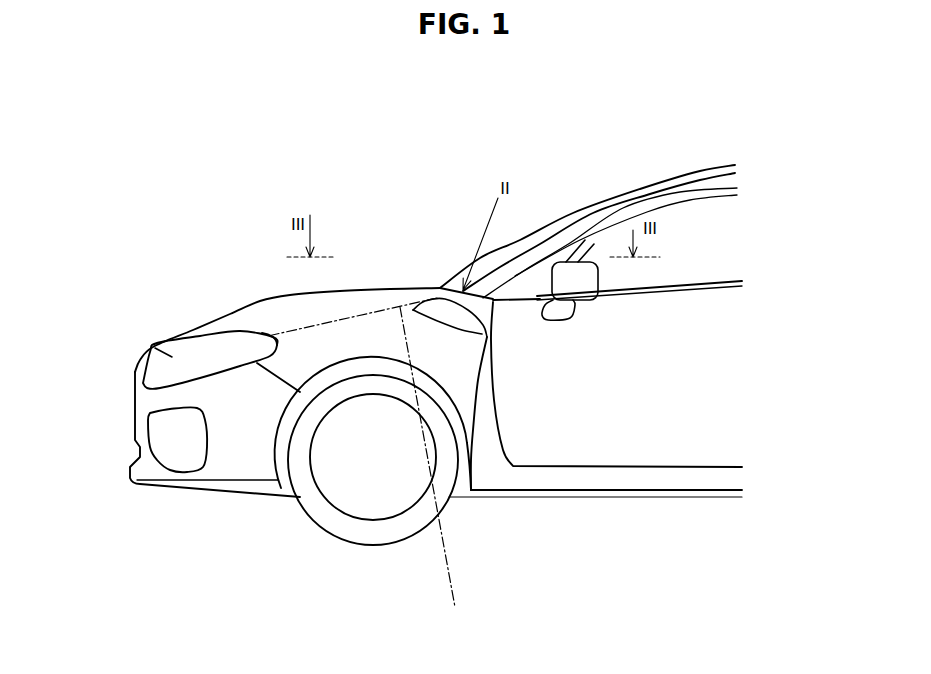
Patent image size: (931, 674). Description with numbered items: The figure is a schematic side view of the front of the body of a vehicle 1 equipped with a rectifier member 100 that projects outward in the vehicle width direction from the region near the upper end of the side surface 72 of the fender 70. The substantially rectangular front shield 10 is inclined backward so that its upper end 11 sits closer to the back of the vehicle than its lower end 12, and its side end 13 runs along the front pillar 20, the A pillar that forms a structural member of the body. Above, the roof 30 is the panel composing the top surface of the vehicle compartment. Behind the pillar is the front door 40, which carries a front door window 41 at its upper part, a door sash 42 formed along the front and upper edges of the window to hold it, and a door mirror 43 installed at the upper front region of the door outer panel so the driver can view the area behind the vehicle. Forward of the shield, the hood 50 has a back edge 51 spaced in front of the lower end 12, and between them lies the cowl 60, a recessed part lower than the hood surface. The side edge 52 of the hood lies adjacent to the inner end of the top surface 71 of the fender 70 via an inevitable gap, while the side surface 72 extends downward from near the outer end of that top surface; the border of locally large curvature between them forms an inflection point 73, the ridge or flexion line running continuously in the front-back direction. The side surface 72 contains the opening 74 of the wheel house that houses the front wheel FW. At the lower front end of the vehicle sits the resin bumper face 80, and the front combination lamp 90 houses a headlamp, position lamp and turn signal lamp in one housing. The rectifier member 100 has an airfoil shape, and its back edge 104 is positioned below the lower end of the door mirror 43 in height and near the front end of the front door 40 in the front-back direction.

The vehicle 1 is at (211, 168).
The front shield 10 is at (573, 213).
The upper end 11 is at (648, 192).
The lower end 12 is at (440, 288).
The side end 13 is at (593, 213).
The front pillar 20 is at (623, 208).
The roof 30 is at (700, 172).
The front door 40 is at (655, 385).
The front door window 41 is at (675, 258).
The door sash 42 is at (648, 210).
The door mirror 43 is at (570, 293).
The hood 50 is at (290, 295).
The back edge 51 is at (400, 307).
The side edge 52 is at (272, 327).
The cowl 60 is at (422, 287).
The fender 70 is at (355, 345).
The top surface 71 is at (382, 303).
The side surface 72 is at (448, 353).
The inflection point 73 is at (436, 468).
The opening 74 is at (377, 367).
The bumper face 80 is at (220, 463).
The front combination lamp 90 is at (172, 357).
The rectifier member 100 is at (462, 330).
The back edge 104 is at (480, 333).
The front wheel FW is at (342, 535).